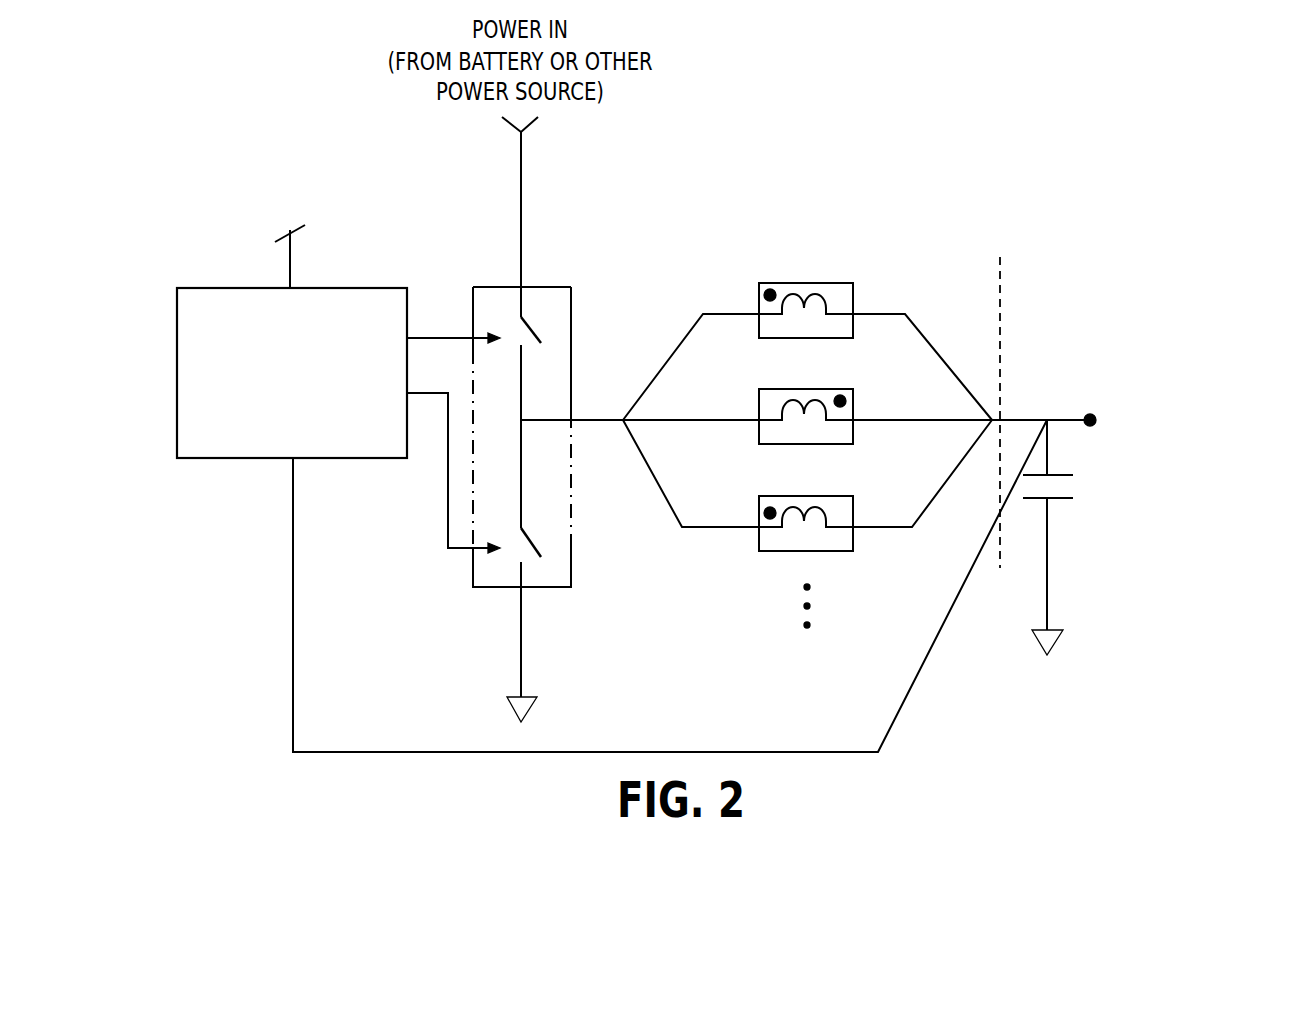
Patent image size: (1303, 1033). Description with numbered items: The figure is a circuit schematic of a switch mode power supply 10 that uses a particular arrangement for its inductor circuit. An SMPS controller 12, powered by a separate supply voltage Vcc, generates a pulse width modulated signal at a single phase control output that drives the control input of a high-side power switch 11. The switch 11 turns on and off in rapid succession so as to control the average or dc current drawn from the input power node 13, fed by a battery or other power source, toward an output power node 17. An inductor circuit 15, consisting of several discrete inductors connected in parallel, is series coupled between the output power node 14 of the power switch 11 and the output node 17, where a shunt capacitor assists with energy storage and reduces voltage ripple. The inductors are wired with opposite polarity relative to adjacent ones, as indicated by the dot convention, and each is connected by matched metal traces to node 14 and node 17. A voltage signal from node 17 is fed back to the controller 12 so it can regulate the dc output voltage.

The switch mode power supply 10 is at (246, 601).
The power switch 11 is at (487, 287).
The SMPS controller 12 is at (220, 287).
The input power node 13 is at (521, 247).
The output power node of the power switch 14 is at (578, 428).
The inductor circuit 15 is at (968, 217).
The output power node 17 is at (1000, 392).